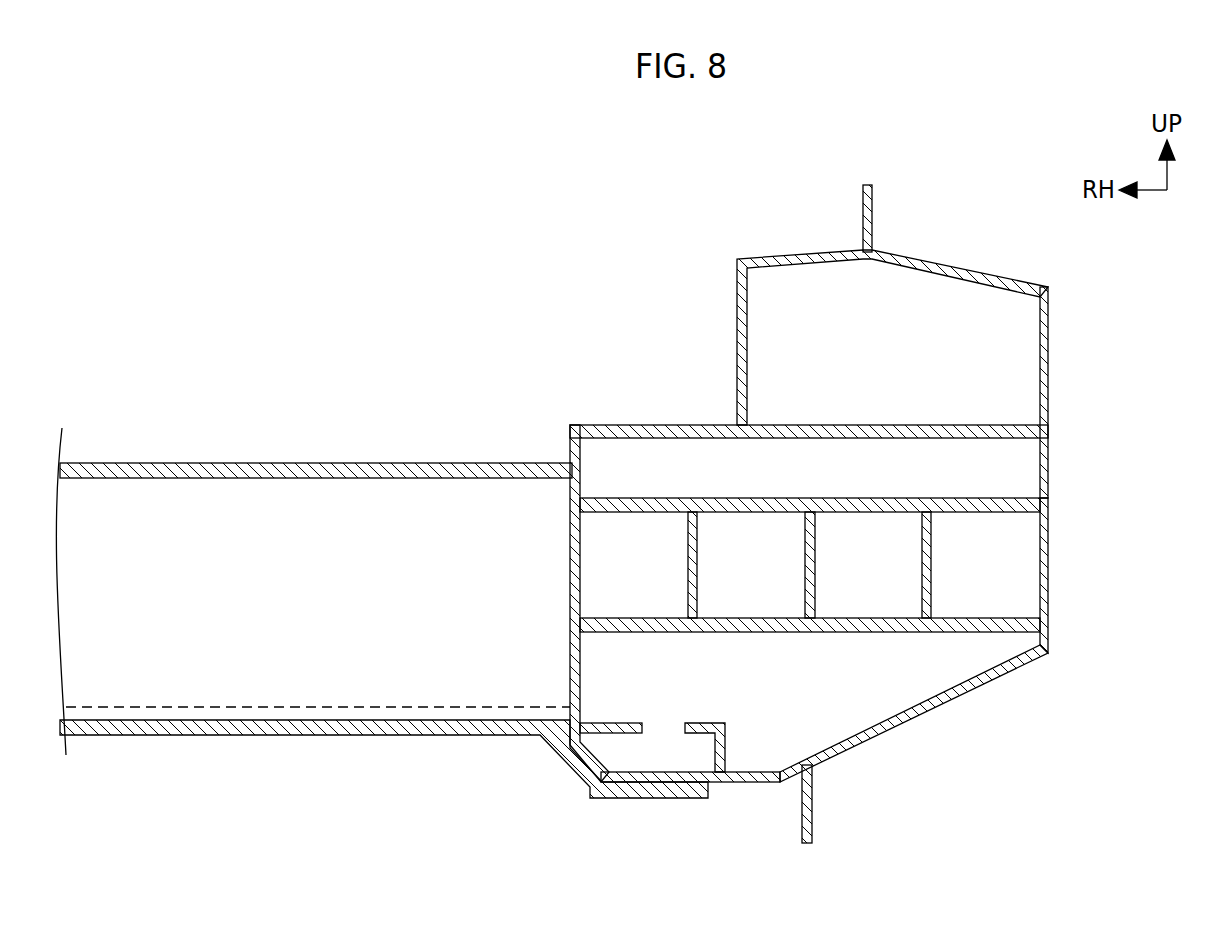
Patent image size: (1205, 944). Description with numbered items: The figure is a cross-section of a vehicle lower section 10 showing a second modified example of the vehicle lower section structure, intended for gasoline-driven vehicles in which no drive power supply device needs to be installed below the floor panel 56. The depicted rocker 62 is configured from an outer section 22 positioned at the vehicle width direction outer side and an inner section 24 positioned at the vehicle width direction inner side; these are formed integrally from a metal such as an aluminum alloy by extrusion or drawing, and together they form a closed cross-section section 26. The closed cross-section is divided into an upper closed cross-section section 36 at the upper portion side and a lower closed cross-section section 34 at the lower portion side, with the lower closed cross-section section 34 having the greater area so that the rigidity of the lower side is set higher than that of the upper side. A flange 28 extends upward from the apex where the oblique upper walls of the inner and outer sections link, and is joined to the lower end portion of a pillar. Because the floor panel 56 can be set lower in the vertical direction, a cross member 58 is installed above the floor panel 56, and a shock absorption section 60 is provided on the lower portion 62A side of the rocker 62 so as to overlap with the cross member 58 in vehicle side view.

The vehicle lower section 10 is at (1122, 343).
The outer section 22 is at (1052, 413).
The inner section 24 is at (733, 331).
The closed cross-section section 26 is at (907, 359).
The flange 28 is at (873, 192).
The lower closed cross-section section 34 is at (814, 686).
The upper closed cross-section section 36 is at (869, 359).
The floor panel 56 is at (270, 737).
The cross member 58 is at (322, 462).
The shock absorption section 60 is at (731, 636).
The rocker 62 is at (1052, 540).
The lower portion 62A is at (1049, 597).